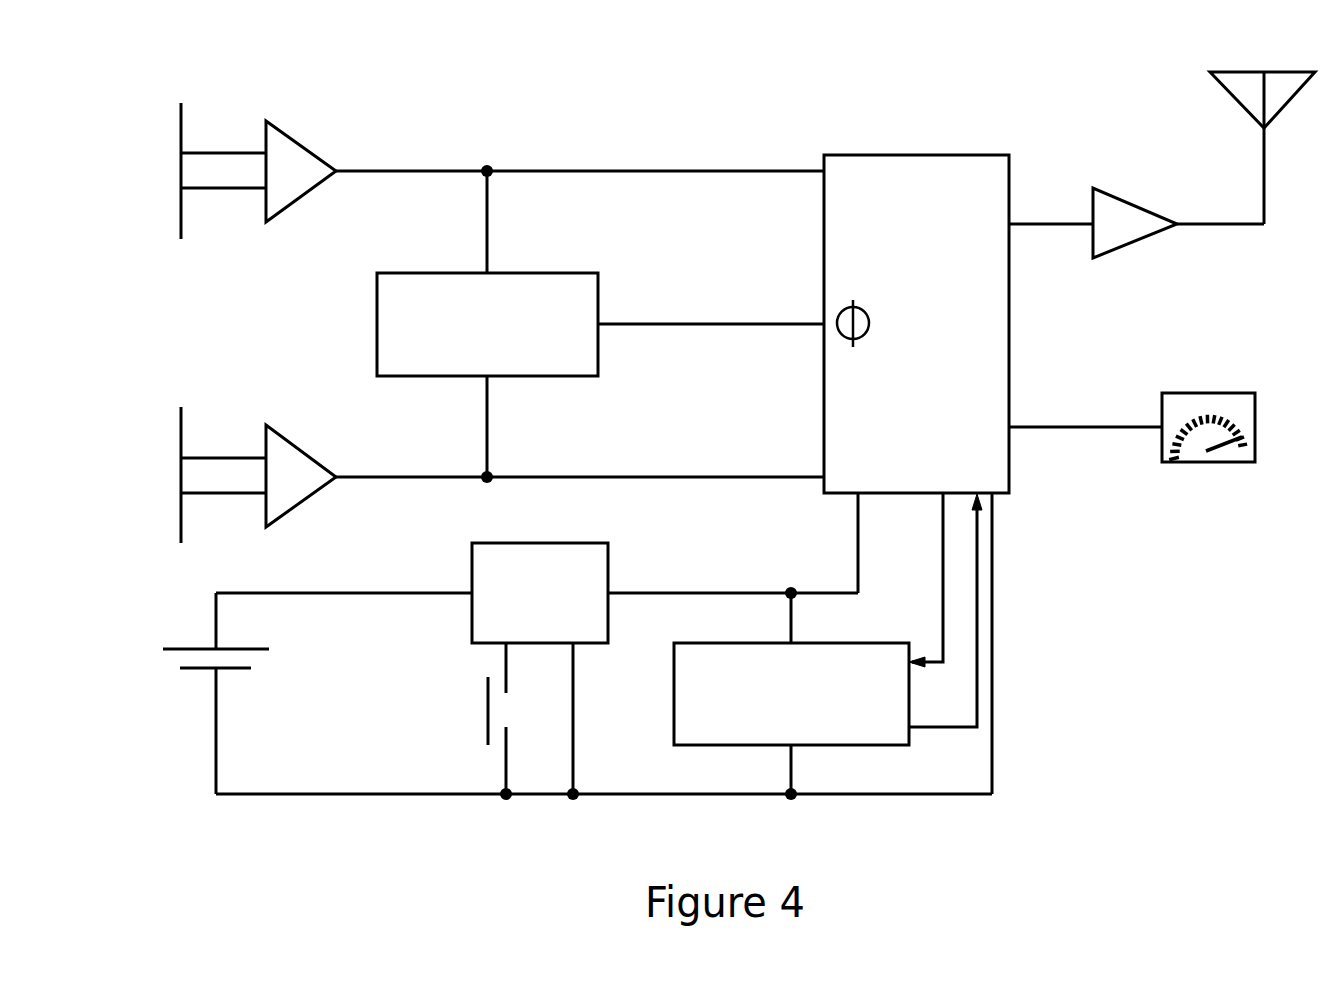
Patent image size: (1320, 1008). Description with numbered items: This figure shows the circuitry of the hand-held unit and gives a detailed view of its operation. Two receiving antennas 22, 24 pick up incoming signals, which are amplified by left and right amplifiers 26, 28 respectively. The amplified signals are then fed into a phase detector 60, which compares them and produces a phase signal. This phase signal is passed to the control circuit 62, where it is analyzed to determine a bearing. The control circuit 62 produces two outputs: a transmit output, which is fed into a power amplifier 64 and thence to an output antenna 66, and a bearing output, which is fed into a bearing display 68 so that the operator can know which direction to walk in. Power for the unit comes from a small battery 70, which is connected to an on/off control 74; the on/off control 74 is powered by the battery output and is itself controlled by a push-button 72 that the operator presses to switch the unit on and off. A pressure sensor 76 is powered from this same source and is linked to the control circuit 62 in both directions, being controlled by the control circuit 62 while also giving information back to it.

The antenna 22 is at (197, 171).
The antenna 24 is at (198, 475).
The left amplifier 26 is at (300, 151).
The right amplifier 28 is at (300, 455).
The phase detector 60 is at (487, 303).
The control circuit 62 is at (915, 303).
The power amplifier 64 is at (1140, 213).
The output antenna 66 is at (1240, 144).
The bearing display 68 is at (1241, 423).
The battery 70 is at (207, 689).
The push-button 72 is at (488, 711).
The on/off control 74 is at (566, 588).
The pressure sensor 76 is at (792, 716).